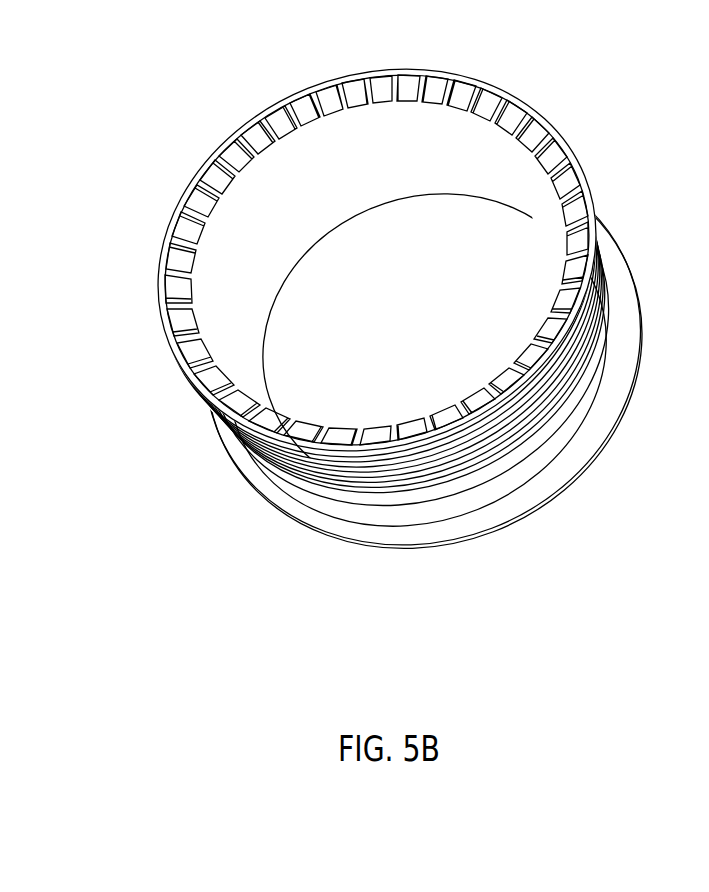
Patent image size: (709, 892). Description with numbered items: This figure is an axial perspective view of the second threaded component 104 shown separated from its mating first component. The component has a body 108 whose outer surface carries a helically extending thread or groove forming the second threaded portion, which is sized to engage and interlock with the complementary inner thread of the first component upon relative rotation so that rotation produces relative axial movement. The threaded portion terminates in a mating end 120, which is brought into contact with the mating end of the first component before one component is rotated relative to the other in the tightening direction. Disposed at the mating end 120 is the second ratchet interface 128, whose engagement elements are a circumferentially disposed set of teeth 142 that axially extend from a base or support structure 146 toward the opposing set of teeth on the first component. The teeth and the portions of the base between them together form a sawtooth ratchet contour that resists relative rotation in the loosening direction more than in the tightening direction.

The second threaded component 104 is at (613, 287).
The body 108 is at (543, 430).
The mating end 120 is at (203, 177).
The second ratchet interface 128 is at (318, 98).
The set of teeth 142 is at (190, 218).
The base or support structure 146 is at (193, 288).